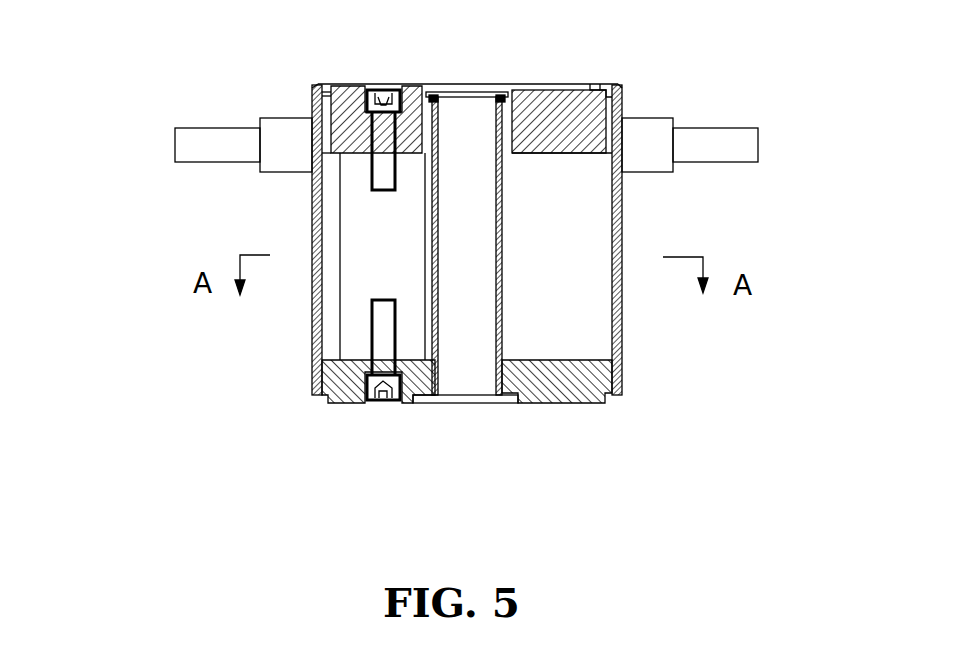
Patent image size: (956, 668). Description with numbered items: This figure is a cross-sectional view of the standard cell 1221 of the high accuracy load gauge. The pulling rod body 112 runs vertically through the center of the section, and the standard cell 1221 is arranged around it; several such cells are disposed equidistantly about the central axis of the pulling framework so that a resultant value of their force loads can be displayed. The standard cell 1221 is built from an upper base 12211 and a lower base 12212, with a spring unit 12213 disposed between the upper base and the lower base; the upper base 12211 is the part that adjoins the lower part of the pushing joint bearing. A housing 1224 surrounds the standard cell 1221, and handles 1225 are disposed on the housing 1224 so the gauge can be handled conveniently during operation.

The pulling rod body 112 is at (458, 123).
The standard cell 1221 is at (341, 208).
The upper base 12211 is at (345, 84).
The lower base 12212 is at (342, 362).
The spring unit 12213 is at (367, 215).
The housing 1224 is at (618, 228).
The handle 1225 is at (702, 140).